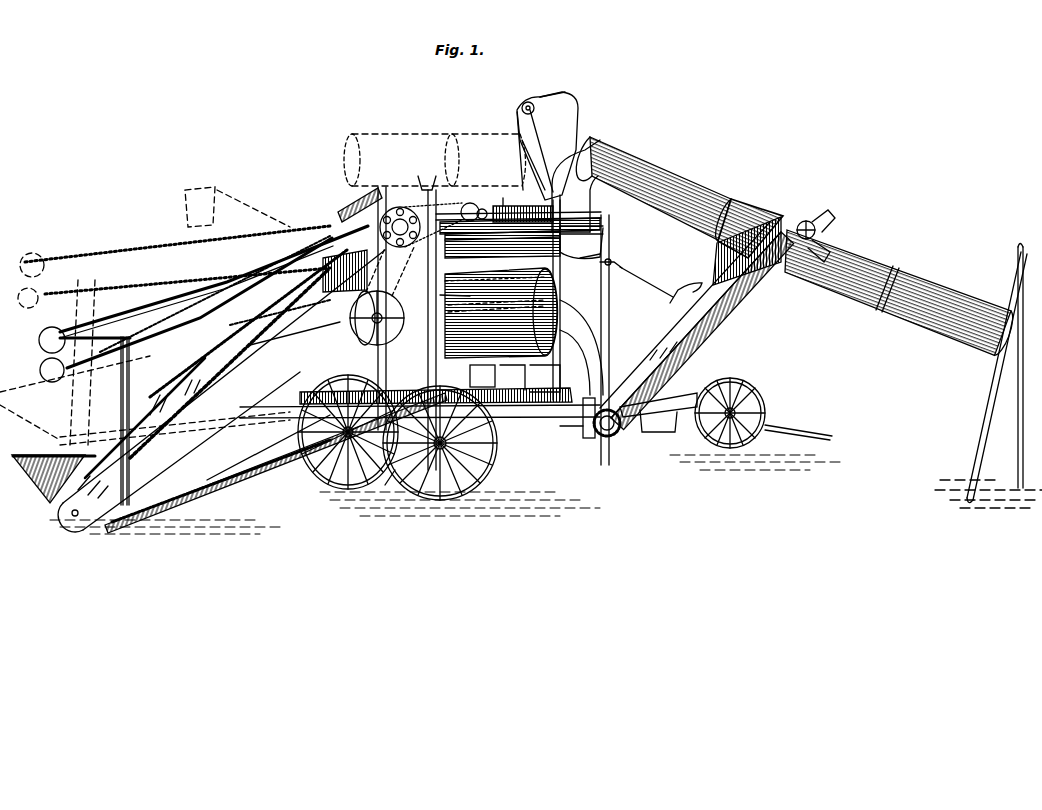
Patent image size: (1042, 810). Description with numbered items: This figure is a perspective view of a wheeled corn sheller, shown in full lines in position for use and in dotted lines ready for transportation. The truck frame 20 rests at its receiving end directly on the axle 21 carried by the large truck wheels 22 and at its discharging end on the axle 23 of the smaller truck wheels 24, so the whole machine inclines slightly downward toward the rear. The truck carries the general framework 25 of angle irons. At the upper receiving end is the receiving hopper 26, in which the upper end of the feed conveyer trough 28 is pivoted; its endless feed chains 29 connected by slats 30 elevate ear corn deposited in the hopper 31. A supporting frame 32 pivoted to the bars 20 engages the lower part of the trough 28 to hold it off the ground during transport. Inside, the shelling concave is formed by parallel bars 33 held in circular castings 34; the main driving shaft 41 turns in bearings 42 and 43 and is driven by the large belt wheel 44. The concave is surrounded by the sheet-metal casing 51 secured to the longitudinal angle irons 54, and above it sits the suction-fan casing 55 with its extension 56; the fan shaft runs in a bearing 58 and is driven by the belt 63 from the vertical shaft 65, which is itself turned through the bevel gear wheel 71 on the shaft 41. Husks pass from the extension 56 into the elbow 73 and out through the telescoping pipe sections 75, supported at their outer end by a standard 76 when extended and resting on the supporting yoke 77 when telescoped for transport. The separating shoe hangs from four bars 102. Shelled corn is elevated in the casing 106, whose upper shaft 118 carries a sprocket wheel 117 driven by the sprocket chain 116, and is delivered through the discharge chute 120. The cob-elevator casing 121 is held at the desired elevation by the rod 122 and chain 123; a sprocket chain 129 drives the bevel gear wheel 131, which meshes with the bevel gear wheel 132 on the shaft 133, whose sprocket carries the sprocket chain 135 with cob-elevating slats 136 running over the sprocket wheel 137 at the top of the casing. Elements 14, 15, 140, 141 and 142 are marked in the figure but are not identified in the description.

The cleaning shoe 14 is at (482, 376).
The fan casing 15 is at (540, 300).
The truck frame 20 is at (545, 408).
The axle 21 is at (381, 493).
The large truck wheels 22 is at (440, 500).
The axle 23 is at (690, 418).
The smaller truck wheels 24 is at (745, 405).
The general framework 25 is at (496, 302).
The receiving hopper 26 is at (388, 190).
The feed conveyer trough 28 is at (240, 405).
The endless feed chains 29 is at (290, 345).
The slats 30 is at (262, 378).
The hopper 31 is at (40, 478).
The supporting frame 32 is at (240, 445).
The parallel bars 33 is at (501, 313).
The circular castings 34 is at (545, 378).
The main driving shaft 41 is at (300, 333).
The bearing 42 is at (455, 287).
The bearing 43 is at (512, 377).
The large belt wheel 44 is at (298, 287).
The sheet-metal casing 51 is at (502, 245).
The longitudinal angle irons 54 is at (520, 238).
The suction-fan casing 55 is at (495, 277).
The extension 56 is at (600, 245).
The bearing 58 is at (504, 186).
The belt 63 is at (520, 210).
The vertical shaft 65 is at (621, 239).
The bevel gear wheel 71 is at (571, 213).
The elbow 73 is at (575, 158).
The telescoping pipe sections 75 is at (657, 175).
The standard 76 is at (1015, 440).
The supporting yoke 77 is at (435, 162).
The bars 102 is at (378, 357).
The shelled-corn-conveyer casing 106 is at (575, 105).
The sprocket chain 116 is at (563, 96).
The sprocket wheel 117 is at (530, 102).
The shaft 118 is at (520, 108).
The discharge chute 120 is at (515, 157).
The cob-elevator casing 121 is at (662, 308).
The rod 122 is at (650, 295).
The chain 123 is at (620, 266).
The sprocket chain 129 is at (648, 434).
The bevel gear wheel 131 is at (610, 436).
The bevel gear wheel 132 is at (590, 438).
The shaft 133 is at (565, 428).
The sprocket chain 135 is at (829, 254).
The cob-elevating slats 136 is at (825, 215).
The sprocket wheel 137 is at (800, 220).
The small sprocket 140 is at (491, 205).
The idler 141 is at (465, 208).
The drive chain 142 is at (440, 205).